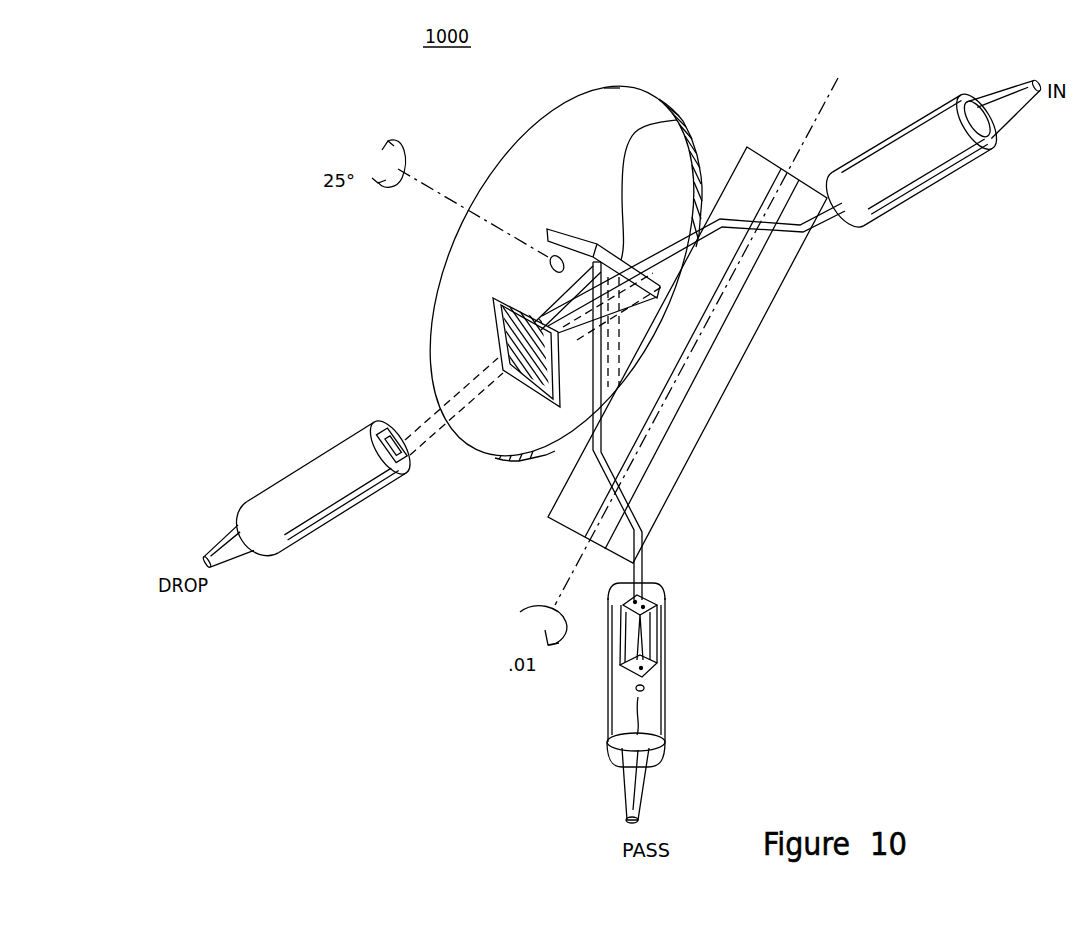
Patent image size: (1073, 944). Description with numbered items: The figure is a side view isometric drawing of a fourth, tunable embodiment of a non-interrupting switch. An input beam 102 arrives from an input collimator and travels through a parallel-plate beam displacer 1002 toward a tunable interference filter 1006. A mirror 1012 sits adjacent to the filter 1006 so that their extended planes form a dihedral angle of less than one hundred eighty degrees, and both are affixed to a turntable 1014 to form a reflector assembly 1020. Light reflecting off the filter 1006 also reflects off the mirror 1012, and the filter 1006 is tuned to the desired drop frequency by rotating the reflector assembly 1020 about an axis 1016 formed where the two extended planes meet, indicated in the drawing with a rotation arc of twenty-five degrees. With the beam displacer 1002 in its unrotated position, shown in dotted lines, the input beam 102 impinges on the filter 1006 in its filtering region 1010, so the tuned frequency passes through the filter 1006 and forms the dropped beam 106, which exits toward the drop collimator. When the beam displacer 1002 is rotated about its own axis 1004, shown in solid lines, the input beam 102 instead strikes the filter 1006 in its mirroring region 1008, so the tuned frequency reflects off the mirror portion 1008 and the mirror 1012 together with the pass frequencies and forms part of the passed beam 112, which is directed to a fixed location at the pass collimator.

The parallel-plate beam displacer 1002 is at (663, 452).
The axis 1004 is at (522, 620).
The tunable filter 1006 is at (508, 392).
The mirroring region 1008 is at (492, 398).
The filtering region 1010 is at (532, 395).
The mirror 1012 is at (677, 120).
The turntable 1014 is at (628, 100).
The axis 1016 is at (430, 188).
The reflector assembly 1020 is at (614, 88).
The input beam 102 is at (888, 210).
The dropped beam 106 is at (320, 523).
The passed beam 112 is at (667, 686).